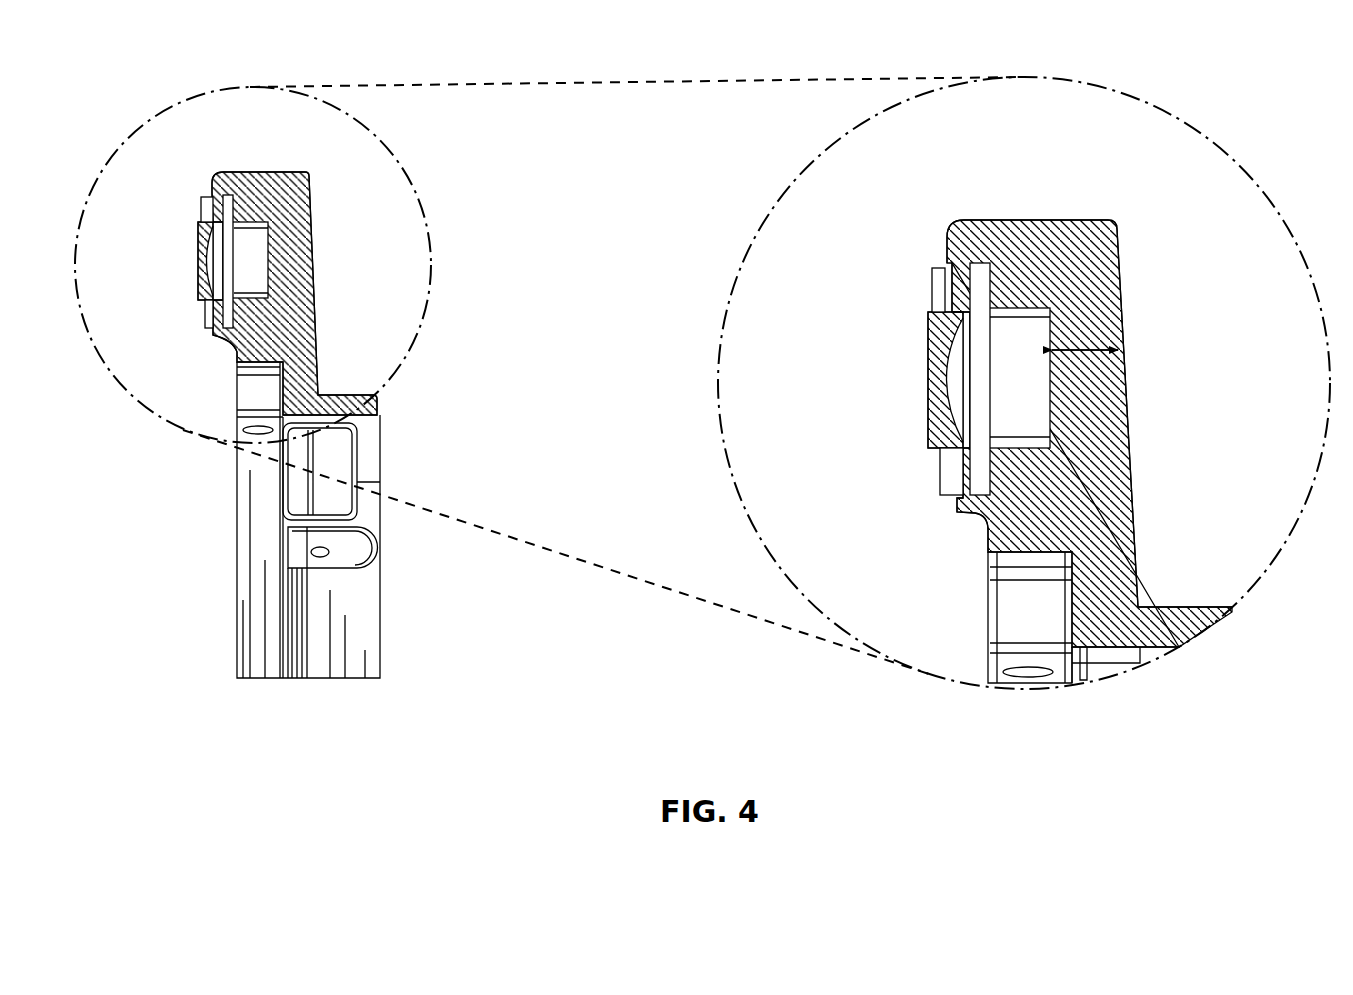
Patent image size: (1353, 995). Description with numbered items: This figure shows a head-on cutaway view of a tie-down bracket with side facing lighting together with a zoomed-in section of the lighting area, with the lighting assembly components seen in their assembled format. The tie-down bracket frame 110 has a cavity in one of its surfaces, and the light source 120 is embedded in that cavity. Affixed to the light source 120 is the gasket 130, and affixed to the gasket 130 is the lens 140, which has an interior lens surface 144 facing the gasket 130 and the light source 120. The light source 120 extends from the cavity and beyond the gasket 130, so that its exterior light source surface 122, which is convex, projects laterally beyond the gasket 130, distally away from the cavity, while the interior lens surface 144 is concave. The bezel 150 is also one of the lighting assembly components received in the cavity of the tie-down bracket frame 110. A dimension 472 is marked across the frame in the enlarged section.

The tie-down bracket frame 110 is at (1113, 303).
The light source 120 is at (1033, 397).
The exterior light source surface 122 is at (963, 420).
The gasket 130 is at (972, 270).
The lens 140 is at (930, 327).
The interior lens surface 144 is at (945, 380).
The bezel 150 is at (953, 472).
The gap width 472 is at (1122, 350).